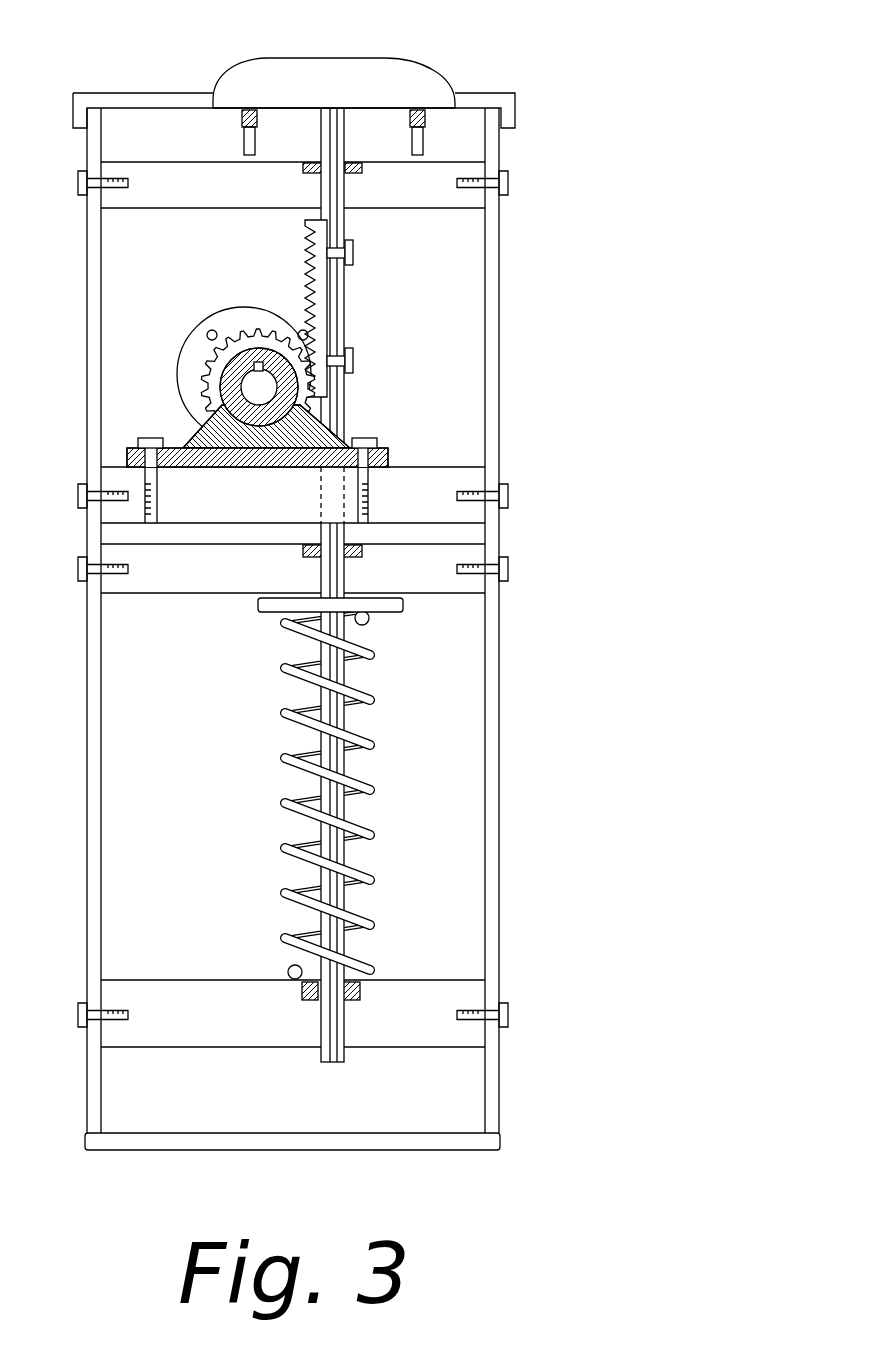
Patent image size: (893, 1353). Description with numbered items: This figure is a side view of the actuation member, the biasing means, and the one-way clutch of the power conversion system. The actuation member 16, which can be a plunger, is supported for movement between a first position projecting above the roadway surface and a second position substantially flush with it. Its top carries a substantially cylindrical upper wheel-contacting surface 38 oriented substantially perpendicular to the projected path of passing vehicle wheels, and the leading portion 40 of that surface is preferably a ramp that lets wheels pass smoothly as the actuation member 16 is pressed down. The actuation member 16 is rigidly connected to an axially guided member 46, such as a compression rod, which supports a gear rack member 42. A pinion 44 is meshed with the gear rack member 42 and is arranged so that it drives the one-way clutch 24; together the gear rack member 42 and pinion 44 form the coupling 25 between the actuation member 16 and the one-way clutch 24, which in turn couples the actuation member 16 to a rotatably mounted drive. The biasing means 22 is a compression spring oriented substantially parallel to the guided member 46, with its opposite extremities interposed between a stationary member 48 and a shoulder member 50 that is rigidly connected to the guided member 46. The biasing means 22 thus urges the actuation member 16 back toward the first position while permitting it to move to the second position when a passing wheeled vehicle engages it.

The actuation member 16 is at (425, 58).
The biasing means 22 is at (370, 585).
The one-way clutch 24 is at (212, 317).
The coupling 25 is at (345, 412).
The wheel-contacting surface 38 is at (330, 57).
The leading portion 40 is at (440, 75).
The gear rack member 42 is at (307, 268).
The pinion 44 is at (200, 363).
The axially guided member 46 is at (345, 316).
The stationary member 48 is at (422, 997).
The shoulder member 50 is at (405, 607).